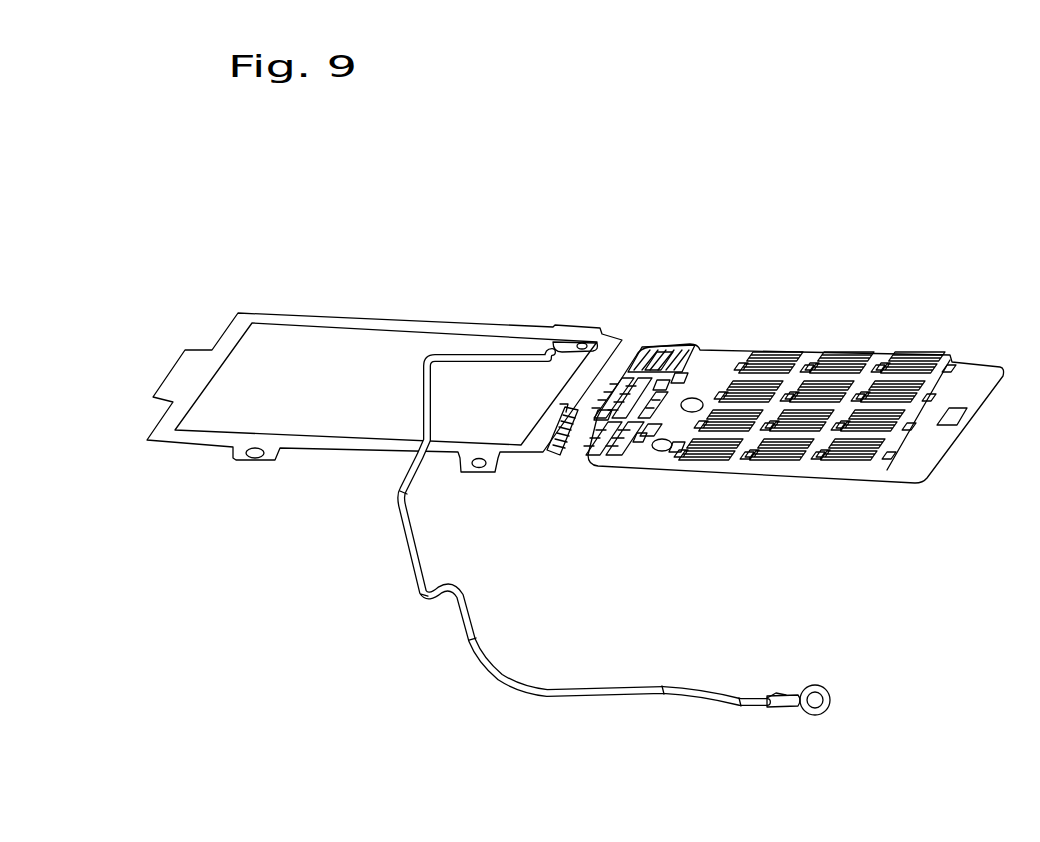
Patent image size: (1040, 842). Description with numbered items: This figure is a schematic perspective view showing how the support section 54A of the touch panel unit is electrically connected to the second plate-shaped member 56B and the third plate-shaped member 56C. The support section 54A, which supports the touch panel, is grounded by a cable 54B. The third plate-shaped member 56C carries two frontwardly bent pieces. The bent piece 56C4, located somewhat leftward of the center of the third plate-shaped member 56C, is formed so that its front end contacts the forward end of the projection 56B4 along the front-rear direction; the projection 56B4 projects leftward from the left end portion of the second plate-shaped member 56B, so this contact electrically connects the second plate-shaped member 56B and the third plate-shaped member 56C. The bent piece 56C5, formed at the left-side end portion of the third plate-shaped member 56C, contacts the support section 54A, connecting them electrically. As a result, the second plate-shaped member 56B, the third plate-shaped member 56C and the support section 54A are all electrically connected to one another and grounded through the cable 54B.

The support section 54A is at (302, 318).
The cable 54B is at (496, 678).
The second plate-shaped member 56B is at (873, 365).
The projection 56B4 is at (690, 398).
The third plate-shaped member 56C is at (980, 380).
The bent piece 56C4 is at (662, 452).
The bent piece 56C5 is at (560, 425).